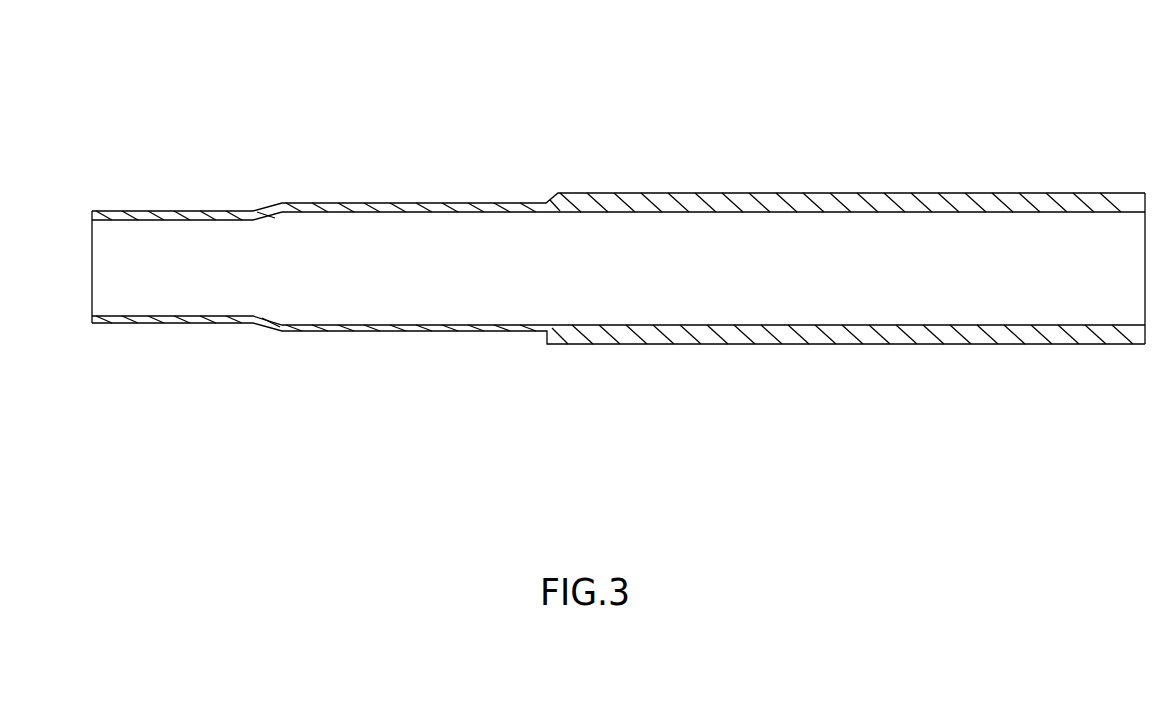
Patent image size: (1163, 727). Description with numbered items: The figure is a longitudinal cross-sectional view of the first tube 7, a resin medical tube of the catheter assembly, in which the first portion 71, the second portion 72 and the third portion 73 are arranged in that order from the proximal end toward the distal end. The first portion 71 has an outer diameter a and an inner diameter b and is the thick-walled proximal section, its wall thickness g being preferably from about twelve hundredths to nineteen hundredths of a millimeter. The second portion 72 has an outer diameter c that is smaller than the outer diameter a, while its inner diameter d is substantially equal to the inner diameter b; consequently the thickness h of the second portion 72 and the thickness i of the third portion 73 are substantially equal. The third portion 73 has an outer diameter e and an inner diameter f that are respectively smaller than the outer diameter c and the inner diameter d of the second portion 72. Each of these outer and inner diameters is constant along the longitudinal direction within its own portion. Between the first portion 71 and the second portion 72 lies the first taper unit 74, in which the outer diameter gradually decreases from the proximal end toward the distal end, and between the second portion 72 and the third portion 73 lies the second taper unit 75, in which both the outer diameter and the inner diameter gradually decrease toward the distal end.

The first tube 7 is at (831, 98).
The first portion 71 is at (1145, 344).
The second portion 72 is at (548, 344).
The third portion 73 is at (92, 323).
The first taper unit 74 is at (560, 344).
The second taper unit 75 is at (285, 331).
The outer diameter of the first portion a is at (1020, 193).
The inner diameter of the first portion b is at (947, 212).
The outer diameter of the second portion c is at (473, 203).
The inner diameter of the second portion d is at (392, 212).
The outer diameter of the third portion e is at (180, 211).
The inner diameter of the third portion f is at (130, 220).
The thickness of the first portion g is at (859, 240).
The thickness of the second portion h is at (353, 240).
The thickness of the third portion i is at (108, 250).